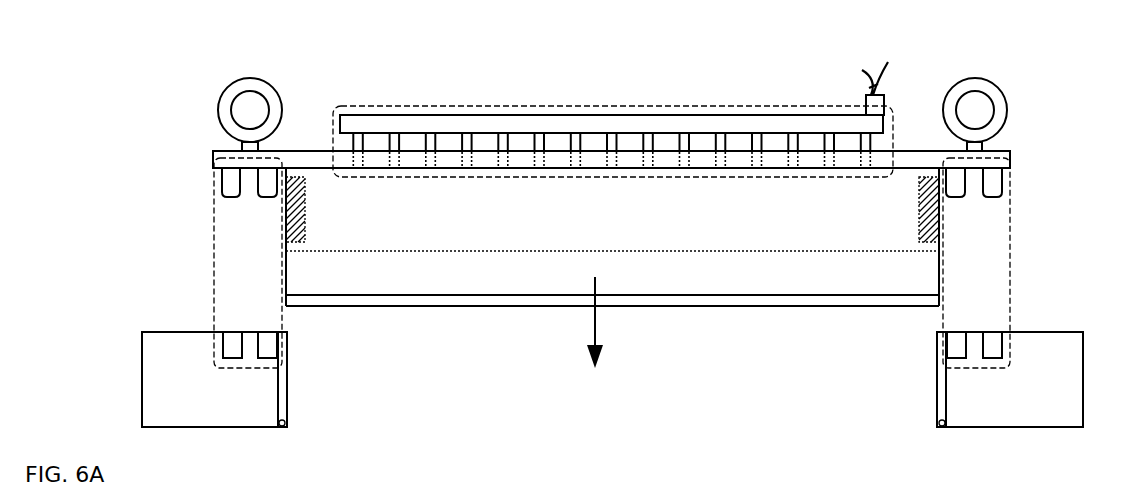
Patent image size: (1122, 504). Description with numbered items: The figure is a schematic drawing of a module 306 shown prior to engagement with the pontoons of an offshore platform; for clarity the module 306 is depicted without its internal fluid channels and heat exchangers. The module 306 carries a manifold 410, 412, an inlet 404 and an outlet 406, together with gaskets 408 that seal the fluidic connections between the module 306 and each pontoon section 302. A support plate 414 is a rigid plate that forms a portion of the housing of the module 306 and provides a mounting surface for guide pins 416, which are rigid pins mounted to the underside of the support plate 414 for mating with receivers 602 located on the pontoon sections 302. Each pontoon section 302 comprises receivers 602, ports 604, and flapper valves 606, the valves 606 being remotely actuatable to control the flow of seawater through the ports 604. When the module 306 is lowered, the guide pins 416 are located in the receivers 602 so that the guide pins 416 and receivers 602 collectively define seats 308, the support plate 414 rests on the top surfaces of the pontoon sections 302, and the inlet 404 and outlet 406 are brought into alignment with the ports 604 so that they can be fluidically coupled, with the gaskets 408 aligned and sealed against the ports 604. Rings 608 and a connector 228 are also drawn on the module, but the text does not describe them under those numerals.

The connector 228 is at (865, 105).
The pontoon section 302 is at (180, 412).
The module 306 is at (588, 68).
The seat 308 is at (214, 223).
The inlet 404 is at (608, 268).
The outlet 406 is at (262, 248).
The gasket 408 is at (305, 213).
The manifold 410 is at (597, 113).
The manifold 412 is at (395, 105).
The support plate 414 is at (908, 150).
The guide pin 416 is at (270, 183).
The receiver 602 is at (268, 347).
The port 604 is at (612, 379).
The flapper valve 606 is at (283, 385).
The roller 608 is at (235, 87).